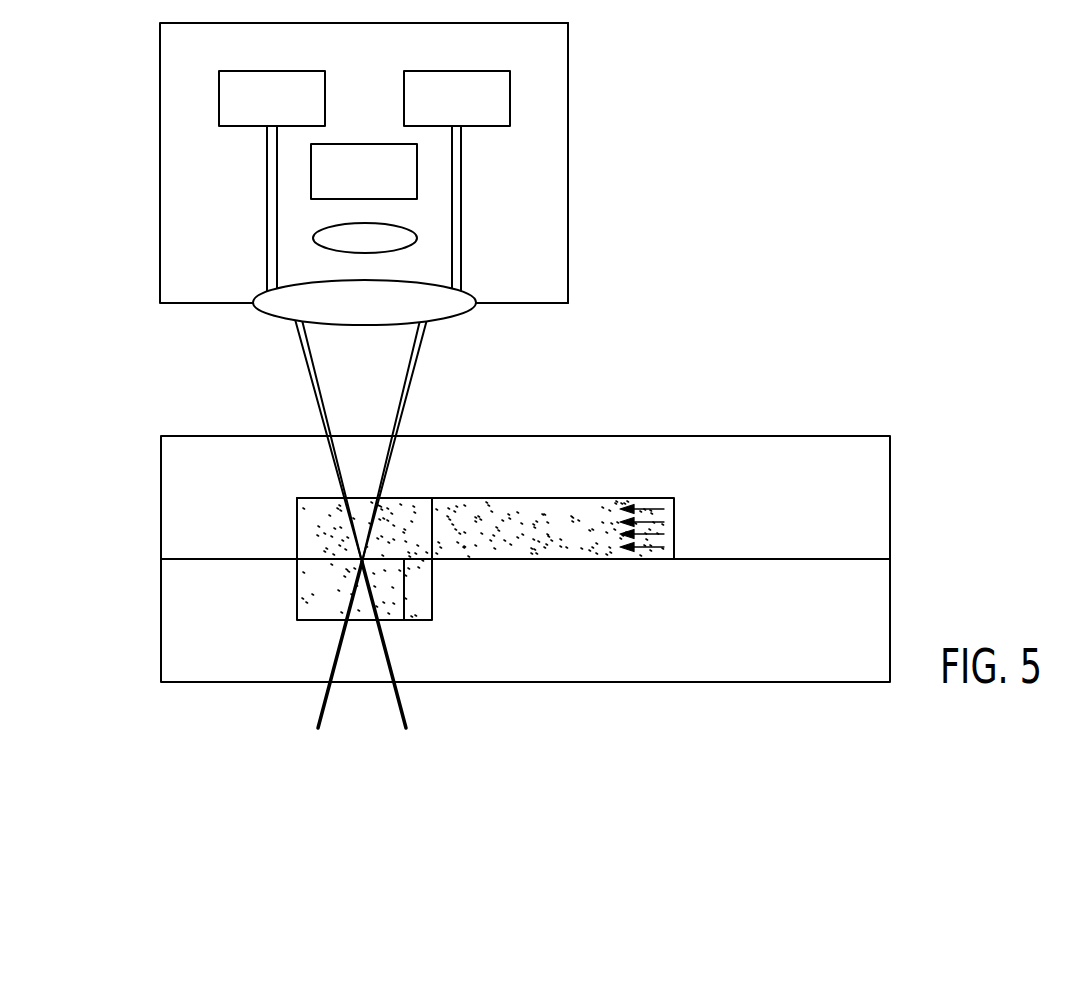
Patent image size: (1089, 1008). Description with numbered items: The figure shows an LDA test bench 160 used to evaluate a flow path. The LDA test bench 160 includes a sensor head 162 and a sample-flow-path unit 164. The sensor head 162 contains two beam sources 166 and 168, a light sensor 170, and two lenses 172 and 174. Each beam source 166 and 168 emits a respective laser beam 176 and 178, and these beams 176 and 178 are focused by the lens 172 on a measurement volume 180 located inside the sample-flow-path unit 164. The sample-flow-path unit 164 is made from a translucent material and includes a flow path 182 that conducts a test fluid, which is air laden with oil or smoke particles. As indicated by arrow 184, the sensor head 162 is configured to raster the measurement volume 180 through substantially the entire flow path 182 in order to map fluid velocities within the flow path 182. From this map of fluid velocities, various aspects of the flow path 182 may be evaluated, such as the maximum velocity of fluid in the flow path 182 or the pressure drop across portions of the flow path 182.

The LDA test bench 160 is at (525, 352).
The sensor head 162 is at (568, 243).
The sample-flow-path unit 164 is at (452, 436).
The beam source 166 is at (219, 106).
The beam source 168 is at (446, 71).
The light sensor 170 is at (375, 144).
The lens 172 is at (363, 252).
The lens 174 is at (363, 328).
The laser beam 176 is at (267, 191).
The laser beam 178 is at (462, 216).
The measurement volume 180 is at (362, 563).
The flow path 182 is at (528, 498).
The arrow 184 is at (574, 79).